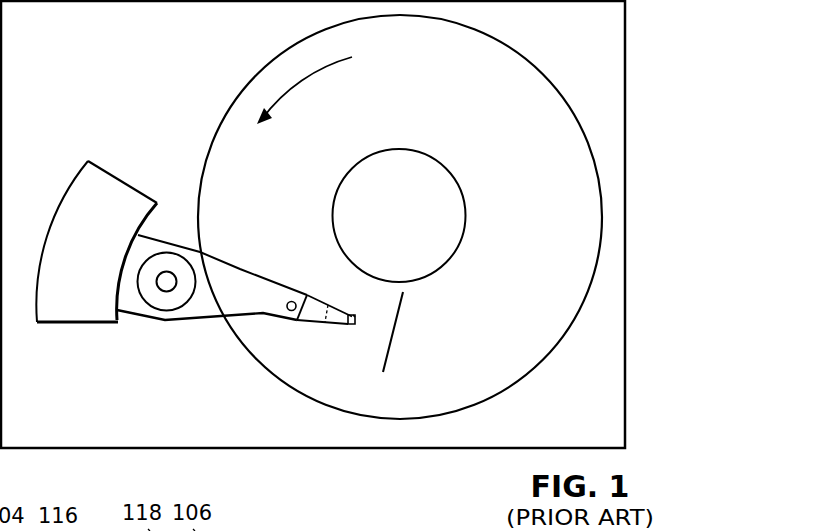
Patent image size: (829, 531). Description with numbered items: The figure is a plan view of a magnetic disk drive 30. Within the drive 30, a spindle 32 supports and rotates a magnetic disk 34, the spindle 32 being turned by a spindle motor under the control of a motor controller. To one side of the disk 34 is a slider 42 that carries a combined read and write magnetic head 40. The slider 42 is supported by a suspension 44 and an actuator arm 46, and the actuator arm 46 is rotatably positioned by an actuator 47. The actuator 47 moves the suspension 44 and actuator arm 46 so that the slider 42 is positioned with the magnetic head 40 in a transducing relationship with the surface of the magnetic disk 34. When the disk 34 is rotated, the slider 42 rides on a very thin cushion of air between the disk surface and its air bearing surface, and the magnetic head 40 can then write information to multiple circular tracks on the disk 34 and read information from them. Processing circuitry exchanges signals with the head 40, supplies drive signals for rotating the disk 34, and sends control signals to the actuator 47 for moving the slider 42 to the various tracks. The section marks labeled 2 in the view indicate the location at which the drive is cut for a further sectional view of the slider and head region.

The magnetic disk drive 30 is at (643, 38).
The spindle 32 is at (437, 158).
The magnetic disk 34 is at (519, 237).
The magnetic head 40 is at (359, 326).
The slider 42 is at (353, 315).
The suspension 44 is at (315, 325).
The actuator arm 46 is at (256, 283).
The actuator 47 is at (128, 188).
The section line for FIG. 2 is at (403, 297).